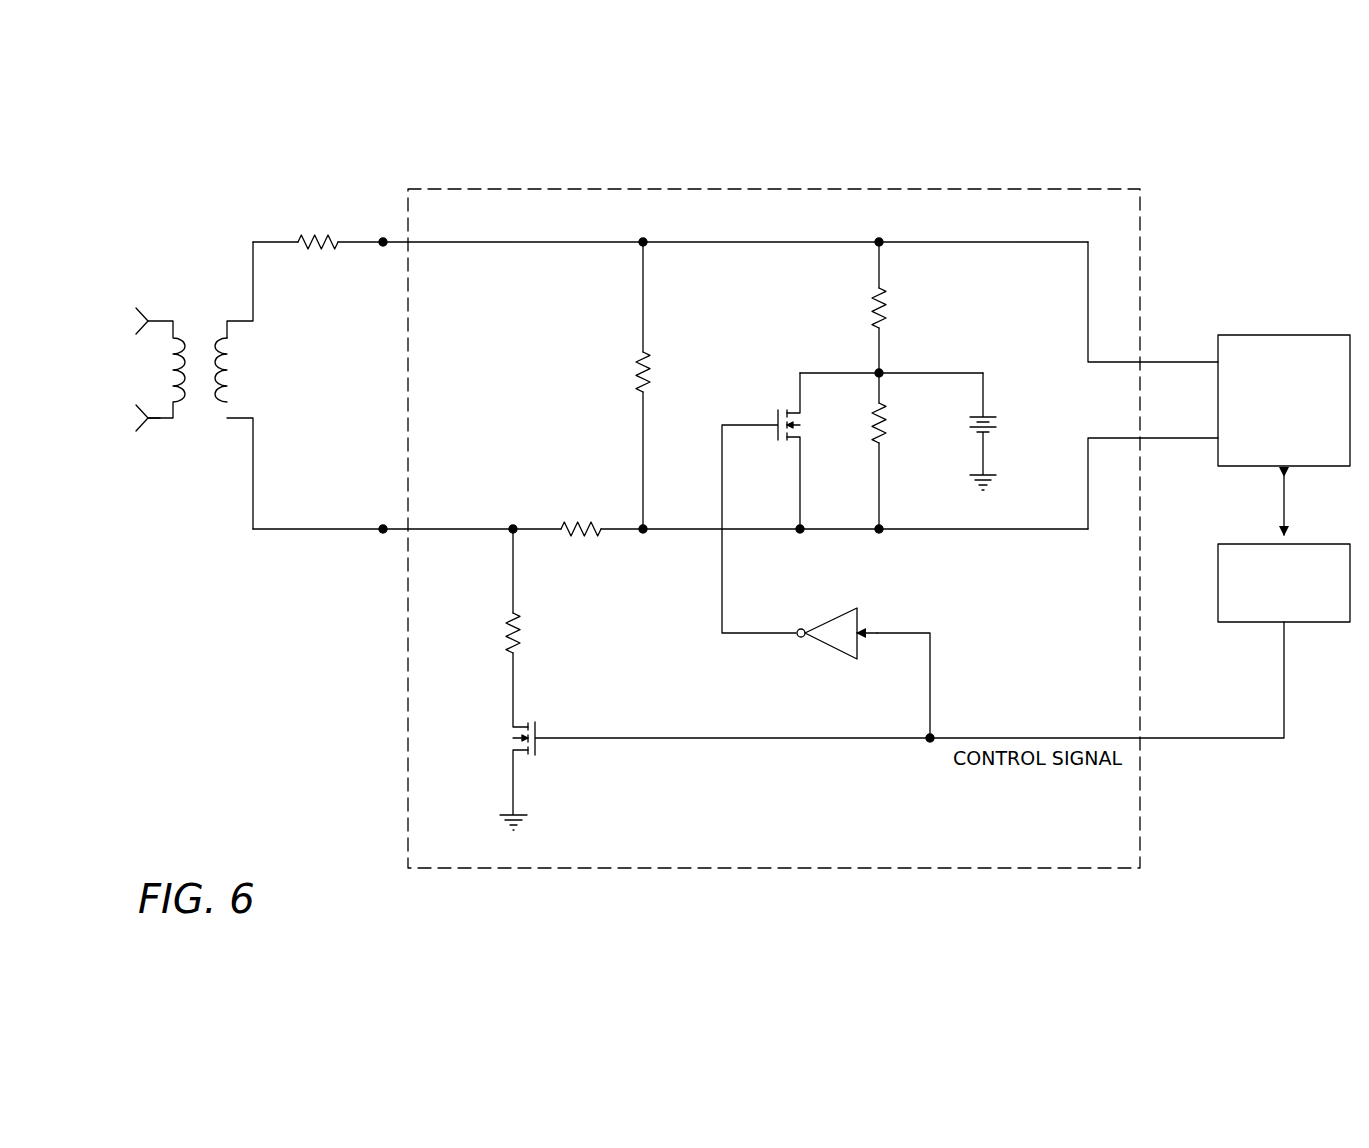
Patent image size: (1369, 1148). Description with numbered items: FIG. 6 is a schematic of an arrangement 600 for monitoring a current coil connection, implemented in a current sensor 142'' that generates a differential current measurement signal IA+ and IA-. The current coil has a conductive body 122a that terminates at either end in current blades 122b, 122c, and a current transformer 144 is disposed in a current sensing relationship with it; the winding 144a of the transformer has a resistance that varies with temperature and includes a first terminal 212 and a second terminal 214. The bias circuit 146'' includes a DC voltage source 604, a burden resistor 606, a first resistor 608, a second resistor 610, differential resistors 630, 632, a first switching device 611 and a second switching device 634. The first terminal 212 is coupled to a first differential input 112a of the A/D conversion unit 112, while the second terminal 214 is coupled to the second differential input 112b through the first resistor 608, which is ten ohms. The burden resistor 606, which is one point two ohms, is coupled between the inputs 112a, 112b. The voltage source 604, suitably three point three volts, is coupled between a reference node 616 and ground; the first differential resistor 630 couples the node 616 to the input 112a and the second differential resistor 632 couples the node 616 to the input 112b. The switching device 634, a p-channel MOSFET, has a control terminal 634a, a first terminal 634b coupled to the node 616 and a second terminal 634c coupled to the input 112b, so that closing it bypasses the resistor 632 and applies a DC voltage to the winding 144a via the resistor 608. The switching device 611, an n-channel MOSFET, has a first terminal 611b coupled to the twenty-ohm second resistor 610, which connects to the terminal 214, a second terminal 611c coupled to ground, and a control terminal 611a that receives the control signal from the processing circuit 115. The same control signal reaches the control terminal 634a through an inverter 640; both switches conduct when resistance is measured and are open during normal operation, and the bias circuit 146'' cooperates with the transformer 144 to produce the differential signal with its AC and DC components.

The arrangement for monitoring a current coil connection 600 is at (989, 143).
The current sensor 142'' is at (657, 321).
The bias circuit 146'' is at (774, 497).
The current transformer 144 is at (257, 410).
The winding 144a is at (222, 357).
The body 122a is at (174, 420).
The current blade 122b is at (137, 307).
The current blade 122c is at (137, 453).
The first terminal 212 is at (381, 250).
The second terminal 214 is at (383, 534).
The burden resistor 606 is at (642, 393).
The first resistor 608 is at (601, 533).
The second resistor 610 is at (512, 630).
The first switching device 611 is at (589, 727).
The control terminal 611a is at (537, 742).
The first terminal 611b is at (513, 725).
The second terminal 611c is at (512, 748).
The first differential resistor 630 is at (875, 295).
The second differential resistor 632 is at (883, 440).
The reference node 616 is at (883, 372).
The DC voltage source 604 is at (985, 413).
The second switching device 634 is at (766, 490).
The control terminal 634a is at (776, 418).
The first terminal 634b is at (778, 408).
The second terminal 634c is at (800, 437).
The inverter 640 is at (858, 612).
The A/D conversion unit 112 is at (1312, 335).
The first differential input 112a is at (1217, 360).
The second differential input 112b is at (1217, 440).
The processing circuit 115 is at (1315, 624).